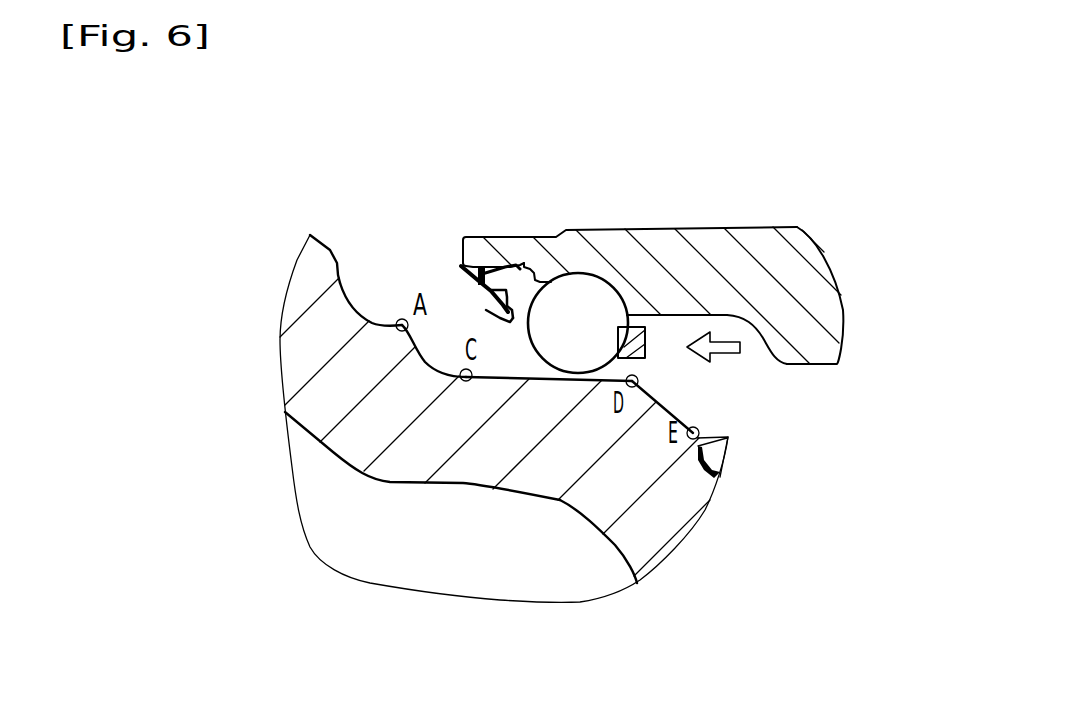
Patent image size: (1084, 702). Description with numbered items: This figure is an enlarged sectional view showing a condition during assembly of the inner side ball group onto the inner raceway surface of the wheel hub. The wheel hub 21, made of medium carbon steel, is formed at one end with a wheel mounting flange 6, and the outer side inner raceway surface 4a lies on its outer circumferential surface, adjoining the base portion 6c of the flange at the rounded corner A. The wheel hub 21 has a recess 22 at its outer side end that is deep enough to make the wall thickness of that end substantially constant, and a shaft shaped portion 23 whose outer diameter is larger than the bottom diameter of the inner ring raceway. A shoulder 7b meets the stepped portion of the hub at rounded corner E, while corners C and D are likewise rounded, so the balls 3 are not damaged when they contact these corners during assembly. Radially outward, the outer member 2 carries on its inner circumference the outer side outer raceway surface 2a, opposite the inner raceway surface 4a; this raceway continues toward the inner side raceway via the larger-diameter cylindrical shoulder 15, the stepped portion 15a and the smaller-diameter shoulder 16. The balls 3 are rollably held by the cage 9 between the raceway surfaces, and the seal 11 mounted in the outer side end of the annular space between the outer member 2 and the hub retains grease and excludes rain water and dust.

The outer member 2 is at (653, 278).
The outer side outer raceway surface 2a is at (590, 280).
The balls 3 is at (608, 320).
The cylindrical shoulder 15 is at (703, 317).
The stepped portion 15a is at (755, 322).
The shoulder 16 is at (804, 366).
The seal 11 is at (468, 282).
The cage 9 is at (645, 337).
The wheel mounting flange 6 is at (312, 271).
The base portion 6c is at (361, 319).
The inner raceway surface 4a is at (419, 363).
The wheel hub 21 is at (386, 457).
The recess 22 is at (598, 532).
The shaft shaped portion 23 is at (543, 378).
The shoulder 7b is at (727, 453).